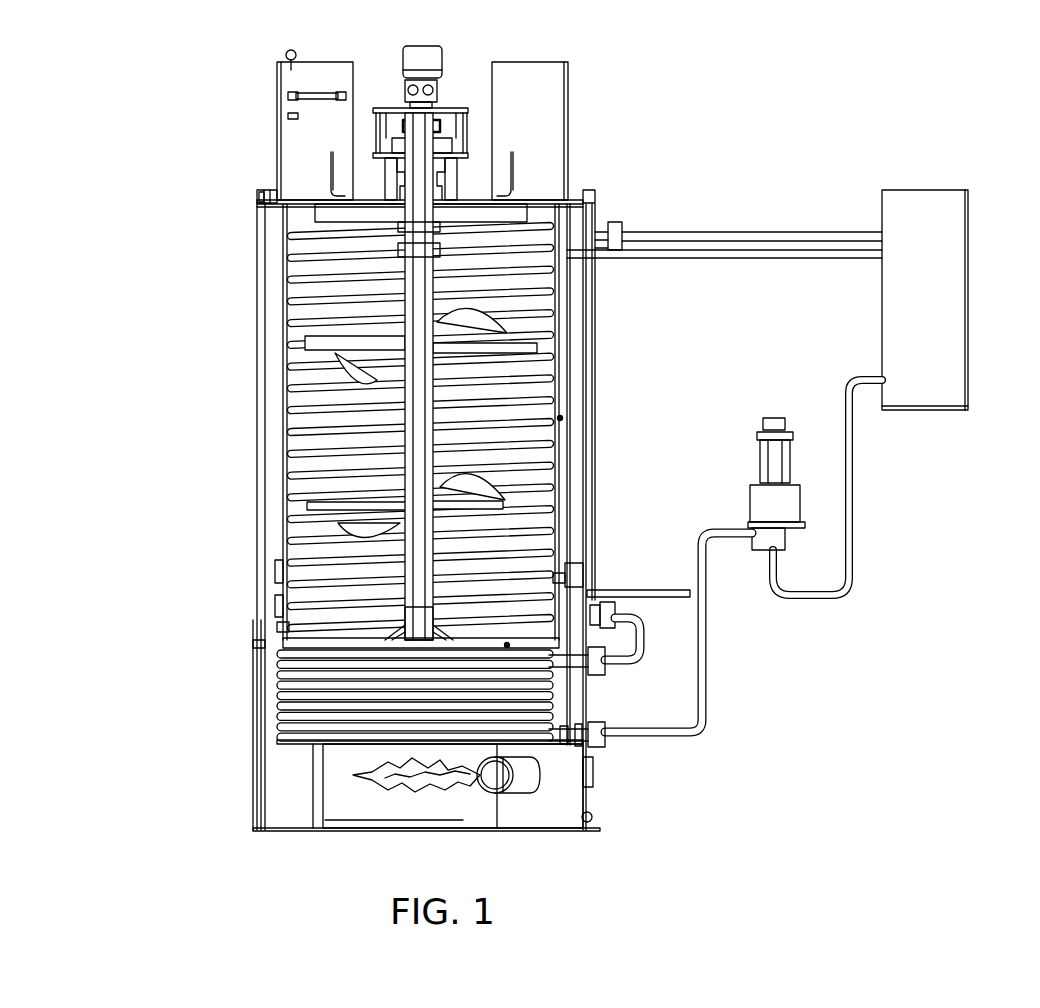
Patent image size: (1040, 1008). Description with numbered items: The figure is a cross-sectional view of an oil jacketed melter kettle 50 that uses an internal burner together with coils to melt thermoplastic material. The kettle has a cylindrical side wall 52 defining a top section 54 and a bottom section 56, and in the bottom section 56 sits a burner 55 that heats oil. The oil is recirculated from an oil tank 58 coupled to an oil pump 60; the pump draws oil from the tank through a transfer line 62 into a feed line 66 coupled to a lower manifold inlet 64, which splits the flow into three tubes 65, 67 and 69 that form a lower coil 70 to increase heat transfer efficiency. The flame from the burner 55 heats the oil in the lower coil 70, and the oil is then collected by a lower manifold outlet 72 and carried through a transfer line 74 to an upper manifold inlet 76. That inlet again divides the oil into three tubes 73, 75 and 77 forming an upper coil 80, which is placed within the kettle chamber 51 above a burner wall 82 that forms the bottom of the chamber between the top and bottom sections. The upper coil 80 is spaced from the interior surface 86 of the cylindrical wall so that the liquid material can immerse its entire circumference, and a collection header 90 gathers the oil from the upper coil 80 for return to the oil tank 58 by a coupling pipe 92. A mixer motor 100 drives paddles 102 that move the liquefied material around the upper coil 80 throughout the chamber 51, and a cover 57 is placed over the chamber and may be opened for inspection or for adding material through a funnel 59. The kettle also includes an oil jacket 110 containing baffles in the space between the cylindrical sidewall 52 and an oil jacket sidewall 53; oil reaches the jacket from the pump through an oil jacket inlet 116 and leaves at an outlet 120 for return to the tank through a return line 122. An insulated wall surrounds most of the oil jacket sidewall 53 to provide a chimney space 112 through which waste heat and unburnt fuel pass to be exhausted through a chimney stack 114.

The melter kettle 50 is at (233, 184).
The kettle chamber 51 is at (487, 222).
The cylindrical side wall 52 is at (265, 268).
The oil jacket sidewall 53 is at (560, 330).
The top section 54 is at (257, 205).
The burner 55 is at (510, 790).
The bottom section 56 is at (253, 795).
The cover 57 is at (263, 192).
The oil tank 58 is at (970, 235).
The funnel 59 is at (295, 75).
The oil pump 60 is at (790, 432).
The transfer line 62 is at (853, 545).
The lower manifold inlet 64 is at (572, 731).
The tube 65 is at (580, 727).
The feed line 66 is at (706, 730).
The tube 67 is at (566, 738).
The tube 69 is at (560, 745).
The lower coil 70 is at (278, 682).
The lower manifold outlet 72 is at (605, 675).
The tube 73 is at (290, 628).
The transfer line 74 is at (640, 640).
The tube 75 is at (275, 603).
The upper manifold inlet 76 is at (615, 607).
The tube 77 is at (275, 578).
The upper coil 80 is at (300, 395).
The burner wall 82 is at (258, 655).
The interior surface 86 is at (284, 455).
The collection header 90 is at (621, 230).
The coupling pipe 92 is at (728, 233).
The mixer motor 100 is at (432, 46).
The paddles 102 is at (330, 350).
The oil jacket 110 is at (507, 645).
The chimney space 112 is at (588, 530).
The chimney stack 114 is at (548, 78).
The oil jacket inlet 116 is at (607, 590).
The outlet 120 is at (603, 262).
The return line 122 is at (762, 259).